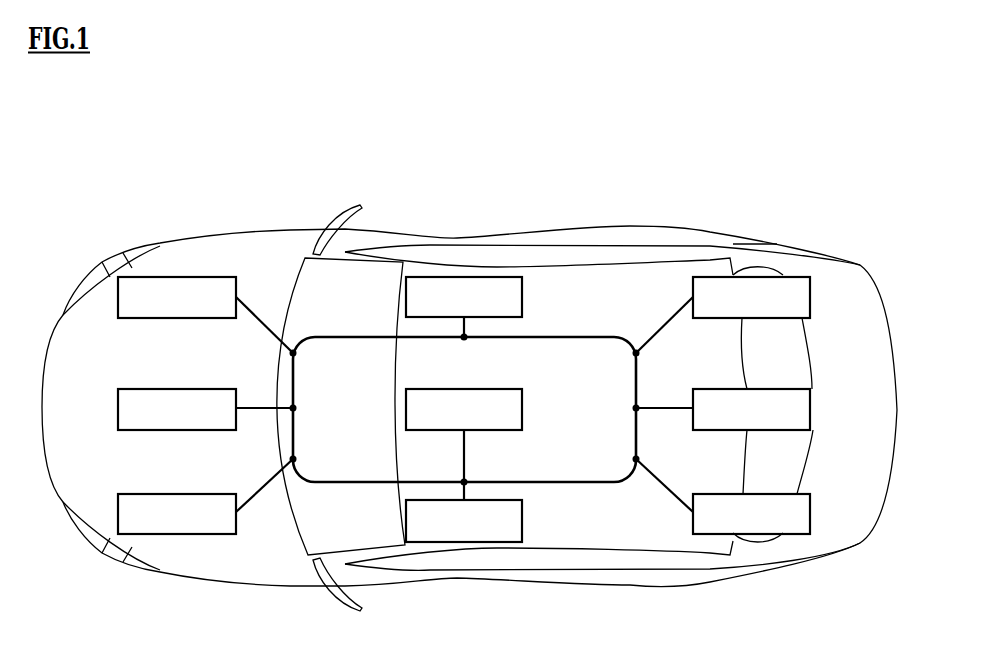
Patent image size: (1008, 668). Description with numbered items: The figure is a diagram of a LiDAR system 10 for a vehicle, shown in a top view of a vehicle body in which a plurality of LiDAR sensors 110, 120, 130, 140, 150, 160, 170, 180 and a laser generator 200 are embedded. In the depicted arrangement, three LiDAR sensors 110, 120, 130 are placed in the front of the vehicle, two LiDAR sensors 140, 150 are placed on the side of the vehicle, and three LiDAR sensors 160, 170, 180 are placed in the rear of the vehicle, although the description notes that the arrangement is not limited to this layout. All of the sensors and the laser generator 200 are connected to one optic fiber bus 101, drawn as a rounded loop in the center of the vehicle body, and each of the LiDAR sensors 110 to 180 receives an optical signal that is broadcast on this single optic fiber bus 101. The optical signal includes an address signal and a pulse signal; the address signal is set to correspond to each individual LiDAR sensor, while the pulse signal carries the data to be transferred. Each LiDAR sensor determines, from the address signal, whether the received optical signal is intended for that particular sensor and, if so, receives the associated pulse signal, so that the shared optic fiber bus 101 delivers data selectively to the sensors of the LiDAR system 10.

The LiDAR system 10 is at (485, 140).
The optic fiber bus 101 is at (555, 482).
The LiDAR sensor 110 is at (177, 277).
The LiDAR sensor 120 is at (177, 389).
The LiDAR sensor 130 is at (177, 494).
The LiDAR sensor 140 is at (522, 297).
The LiDAR sensor 150 is at (522, 520).
The LiDAR sensor 160 is at (783, 277).
The LiDAR sensor 170 is at (800, 389).
The LiDAR sensor 180 is at (795, 494).
The laser generator 200 is at (522, 408).